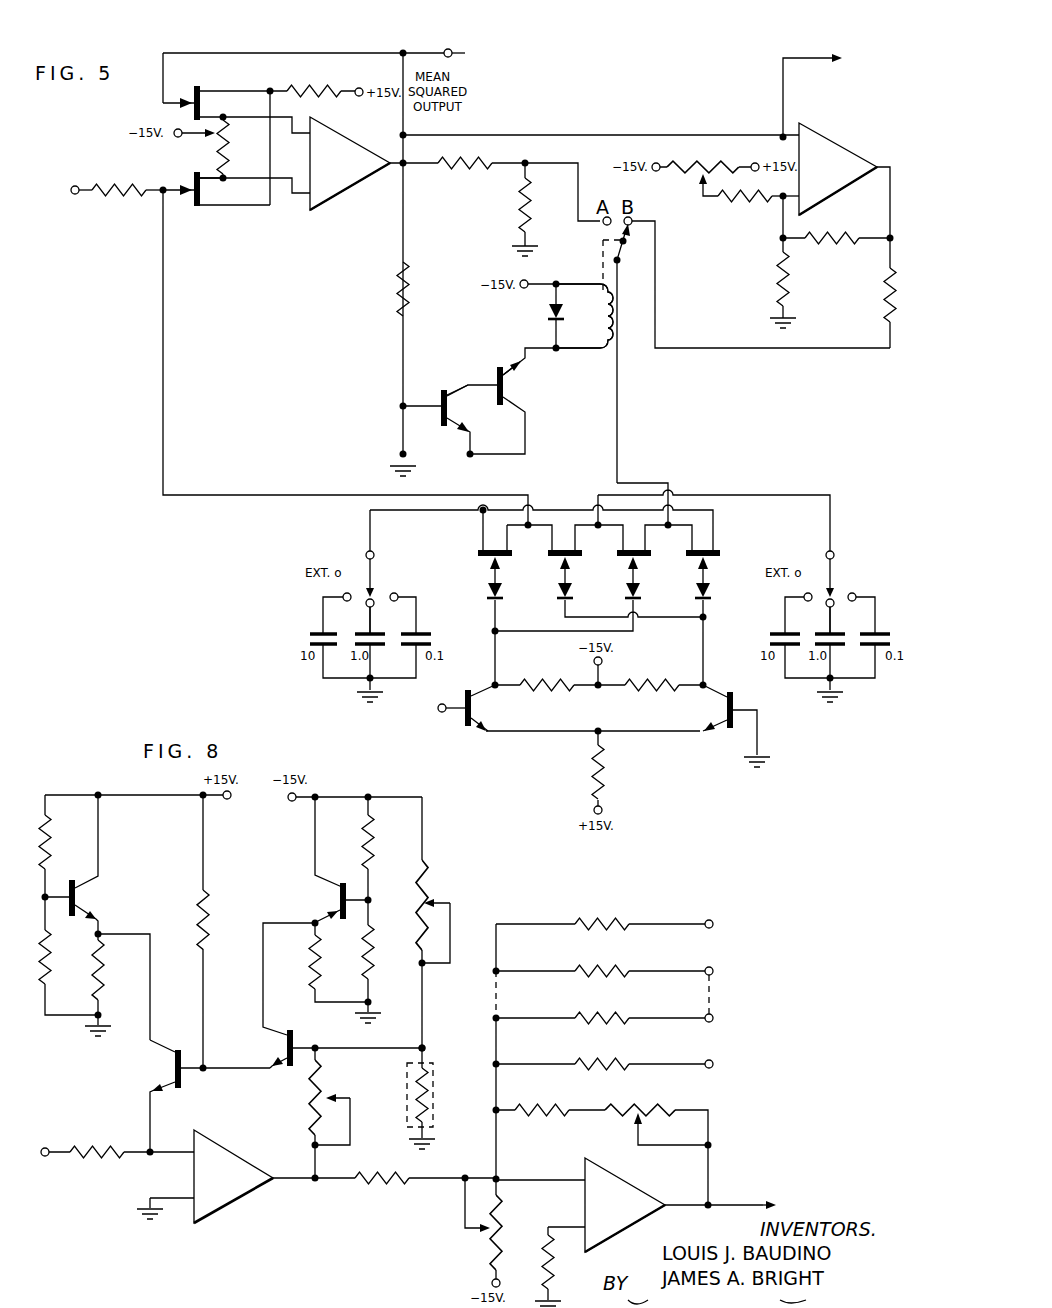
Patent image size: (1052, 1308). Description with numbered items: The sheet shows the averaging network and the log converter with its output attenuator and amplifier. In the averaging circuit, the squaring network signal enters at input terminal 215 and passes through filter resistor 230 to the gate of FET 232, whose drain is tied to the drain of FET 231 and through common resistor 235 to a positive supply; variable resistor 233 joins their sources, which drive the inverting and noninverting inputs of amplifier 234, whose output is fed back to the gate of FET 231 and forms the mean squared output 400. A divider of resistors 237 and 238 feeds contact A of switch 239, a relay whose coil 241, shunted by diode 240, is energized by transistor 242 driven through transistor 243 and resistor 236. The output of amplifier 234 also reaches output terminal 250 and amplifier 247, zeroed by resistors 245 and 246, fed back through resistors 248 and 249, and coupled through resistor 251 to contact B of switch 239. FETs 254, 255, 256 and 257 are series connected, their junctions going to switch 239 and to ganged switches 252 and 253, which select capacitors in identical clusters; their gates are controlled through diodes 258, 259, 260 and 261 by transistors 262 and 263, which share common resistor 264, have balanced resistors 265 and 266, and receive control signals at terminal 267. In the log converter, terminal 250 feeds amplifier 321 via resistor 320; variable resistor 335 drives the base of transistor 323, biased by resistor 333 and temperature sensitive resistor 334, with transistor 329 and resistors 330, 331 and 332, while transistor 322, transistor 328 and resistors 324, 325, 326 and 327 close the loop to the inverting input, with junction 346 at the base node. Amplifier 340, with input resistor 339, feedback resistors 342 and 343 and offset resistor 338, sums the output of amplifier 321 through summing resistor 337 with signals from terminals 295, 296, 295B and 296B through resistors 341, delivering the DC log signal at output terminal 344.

In FIG. 5, the input terminal 215 is at (70, 186).
In FIG. 5, the filter resistor 230 is at (118, 200).
In FIG. 5, the FET 231 is at (185, 121).
In FIG. 5, the FET 232 is at (196, 210).
In FIG. 5, the variable resistor 233 is at (215, 165).
In FIG. 5, the amplifier 234 is at (340, 141).
In FIG. 5, the common resistor 235 is at (322, 88).
In FIG. 5, the resistor 236 is at (393, 286).
In FIG. 5, the resistor 237 is at (480, 168).
In FIG. 5, the resistor 238 is at (517, 204).
In FIG. 5, the switch 239 is at (603, 258).
In FIG. 5, the diode 240 is at (548, 313).
In FIG. 5, the coil 241 is at (600, 315).
In FIG. 5, the transistor 242 is at (496, 378).
In FIG. 5, the transistor 243 is at (440, 394).
In FIG. 5, the variable resistor 245 is at (716, 160).
In FIG. 5, the resistor 246 is at (740, 205).
In FIG. 5, the amplifier 247 is at (822, 142).
In FIG. 5, the resistor 248 is at (828, 246).
In FIG. 5, the resistor 249 is at (776, 276).
In FIG. 5, the output terminal 250 is at (833, 64).
In FIG. 8, the output terminal 250 is at (47, 1147).
In FIG. 5, the resistor 251 is at (885, 293).
In FIG. 5, the switch 252 is at (376, 580).
In FIG. 5, the switch 253 is at (836, 580).
In FIG. 5, the FET 254 is at (516, 563).
In FIG. 5, the FET 255 is at (584, 563).
In FIG. 5, the FET 256 is at (652, 563).
In FIG. 5, the FET 257 is at (722, 563).
In FIG. 5, the diode 258 is at (480, 592).
In FIG. 5, the diode 259 is at (548, 594).
In FIG. 5, the diode 260 is at (622, 592).
In FIG. 5, the diode 261 is at (692, 594).
In FIG. 5, the transistor 262 is at (462, 726).
In FIG. 5, the transistor 263 is at (735, 698).
In FIG. 5, the common resistor 264 is at (604, 774).
In FIG. 5, the balanced resistor 265 is at (560, 678).
In FIG. 5, the balanced resistor 266 is at (652, 678).
In FIG. 5, the terminal 267 is at (437, 709).
In FIG. 5, the mean squared output terminal 400 is at (475, 55).
In FIG. 8, the resistor 320 is at (96, 1160).
In FIG. 8, the amplifier 321 is at (218, 1154).
In FIG. 8, the transistor 322 is at (172, 1063).
In FIG. 8, the transistor 323 is at (287, 1044).
In FIG. 8, the resistor 324 is at (208, 932).
In FIG. 8, the resistor 325 is at (102, 968).
In FIG. 8, the resistor 326 is at (62, 950).
In FIG. 8, the resistor 327 is at (62, 838).
In FIG. 8, the transistor 328 is at (80, 897).
In FIG. 8, the transistor 329 is at (340, 900).
In FIG. 8, the resistor 330 is at (330, 948).
In FIG. 8, the resistor 331 is at (384, 945).
In FIG. 8, the resistor 332 is at (372, 847).
In FIG. 8, the variable resistor 333 is at (430, 892).
In FIG. 8, the temperature sensitive resistor 334 is at (432, 1100).
In FIG. 8, the variable resistor 335 is at (322, 1086).
In FIG. 8, the summing resistor 337 is at (380, 1190).
In FIG. 8, the variable resistor 338 is at (488, 1244).
In FIG. 8, the resistor 339 is at (536, 1274).
In FIG. 8, the amplifier 340 is at (622, 1188).
In FIG. 8, the resistor 341 is at (605, 1060).
In FIG. 8, the resistor 342 is at (545, 1108).
In FIG. 8, the variable resistor 343 is at (645, 1108).
In FIG. 8, the output terminal 344 is at (772, 1200).
In FIG. 8, the junction 346 is at (428, 1044).
In FIG. 8, the terminal 295 is at (713, 924).
In FIG. 8, the terminal 296 is at (713, 971).
In FIG. 8, the input terminal 295B is at (713, 1018).
In FIG. 8, the input terminal 296B is at (713, 1064).